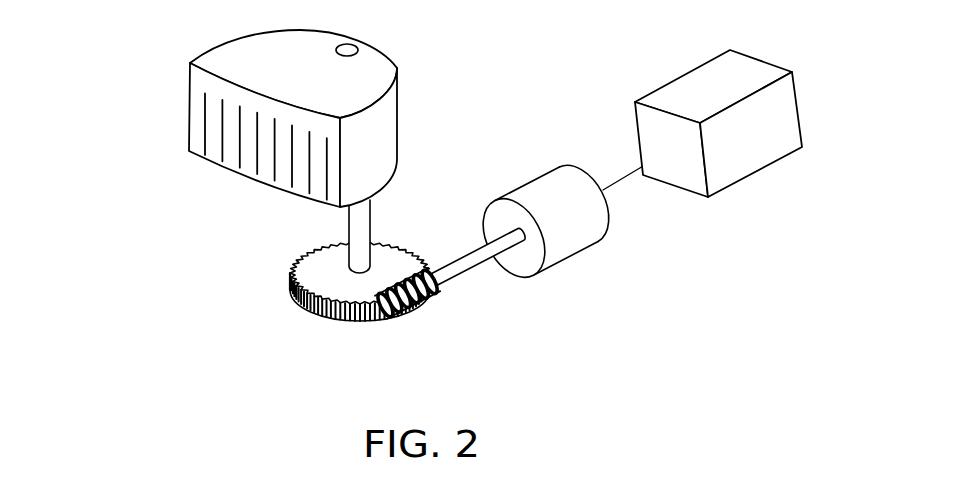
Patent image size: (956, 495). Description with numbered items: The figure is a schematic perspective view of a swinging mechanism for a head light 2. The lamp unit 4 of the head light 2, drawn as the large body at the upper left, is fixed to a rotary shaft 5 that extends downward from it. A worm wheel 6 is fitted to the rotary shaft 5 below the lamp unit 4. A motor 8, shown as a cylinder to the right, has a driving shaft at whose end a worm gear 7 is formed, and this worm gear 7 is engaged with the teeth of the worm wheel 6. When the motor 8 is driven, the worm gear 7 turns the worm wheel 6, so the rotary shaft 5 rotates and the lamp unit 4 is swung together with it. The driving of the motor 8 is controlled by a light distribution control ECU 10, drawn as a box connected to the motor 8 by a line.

The head light 2 is at (158, 117).
The lamp unit 4 is at (383, 148).
The rotary shaft 5 is at (348, 208).
The worm wheel 6 is at (290, 293).
The worm gear 7 is at (420, 317).
The motor 8 is at (570, 257).
The light distribution control ECU 10 is at (763, 58).